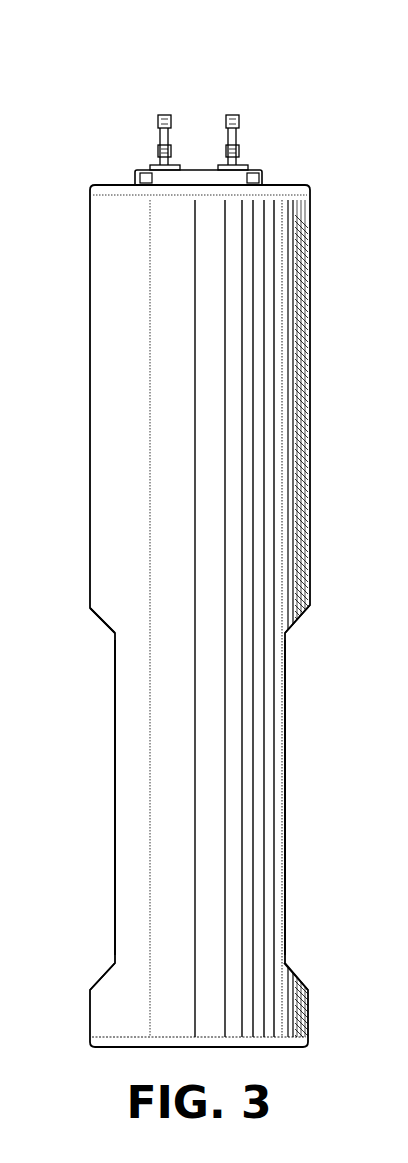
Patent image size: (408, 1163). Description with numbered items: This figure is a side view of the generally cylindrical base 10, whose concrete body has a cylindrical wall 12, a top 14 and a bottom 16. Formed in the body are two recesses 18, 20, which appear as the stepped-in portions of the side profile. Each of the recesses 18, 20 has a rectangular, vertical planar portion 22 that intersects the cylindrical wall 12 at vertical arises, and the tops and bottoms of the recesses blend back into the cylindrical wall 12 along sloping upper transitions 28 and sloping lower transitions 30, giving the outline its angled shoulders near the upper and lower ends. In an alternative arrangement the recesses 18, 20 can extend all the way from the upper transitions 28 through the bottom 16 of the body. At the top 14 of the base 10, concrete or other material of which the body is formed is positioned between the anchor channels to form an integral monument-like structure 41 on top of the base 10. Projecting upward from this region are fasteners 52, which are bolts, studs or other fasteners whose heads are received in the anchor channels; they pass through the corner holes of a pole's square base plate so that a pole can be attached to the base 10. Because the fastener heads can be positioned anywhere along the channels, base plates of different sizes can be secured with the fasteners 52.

The base 10 is at (187, 85).
The cylindrical wall 12 is at (293, 278).
The top 14 is at (257, 160).
The bottom 16 is at (275, 1048).
The recess 18 is at (305, 782).
The recess 20 is at (85, 773).
The vertical planar portion 22 is at (113, 868).
The upper transition 28 is at (97, 616).
The lower transition 30 is at (100, 975).
The monument-like structure 41 is at (198, 178).
The fastener 52 is at (230, 137).